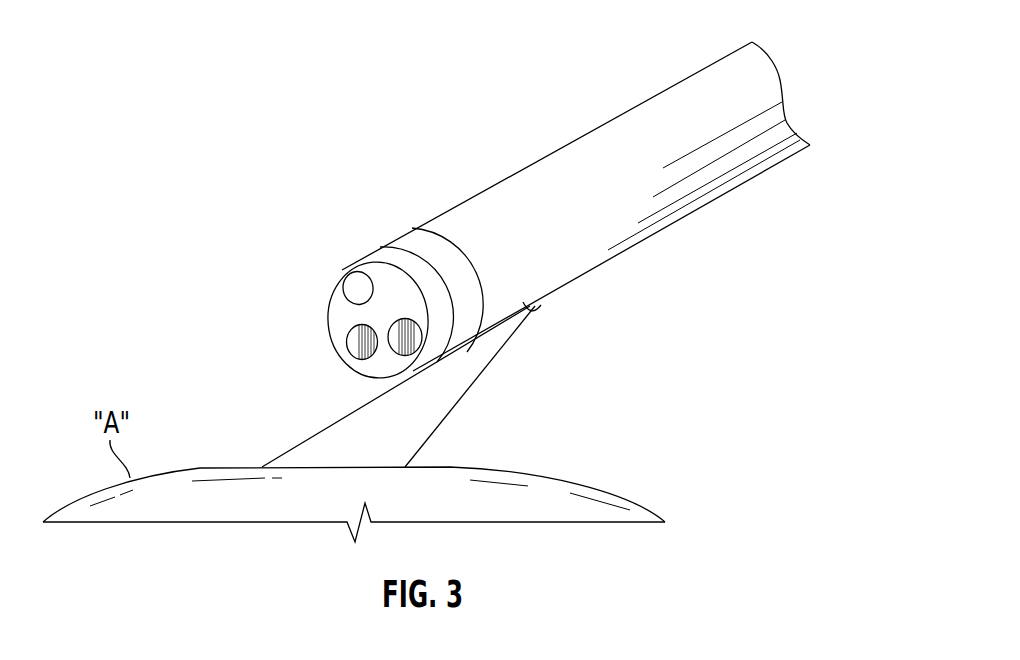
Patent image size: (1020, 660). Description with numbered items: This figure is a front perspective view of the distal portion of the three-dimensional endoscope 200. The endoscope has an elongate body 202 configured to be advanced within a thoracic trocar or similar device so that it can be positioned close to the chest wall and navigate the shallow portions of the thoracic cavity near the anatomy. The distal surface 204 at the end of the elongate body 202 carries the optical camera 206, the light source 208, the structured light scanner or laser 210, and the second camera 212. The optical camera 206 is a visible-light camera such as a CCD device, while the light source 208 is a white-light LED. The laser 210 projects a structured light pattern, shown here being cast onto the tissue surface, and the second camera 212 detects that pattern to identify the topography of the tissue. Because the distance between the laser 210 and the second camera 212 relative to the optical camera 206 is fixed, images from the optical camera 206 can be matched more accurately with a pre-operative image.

The 3D endoscope 200 is at (442, 223).
The elongate body 202 is at (487, 217).
The distal surface 204 is at (338, 308).
The optical camera 206 is at (348, 346).
The light source 208 is at (350, 267).
The structured light scanner (laser) 210 is at (557, 298).
The second camera 212 is at (418, 352).